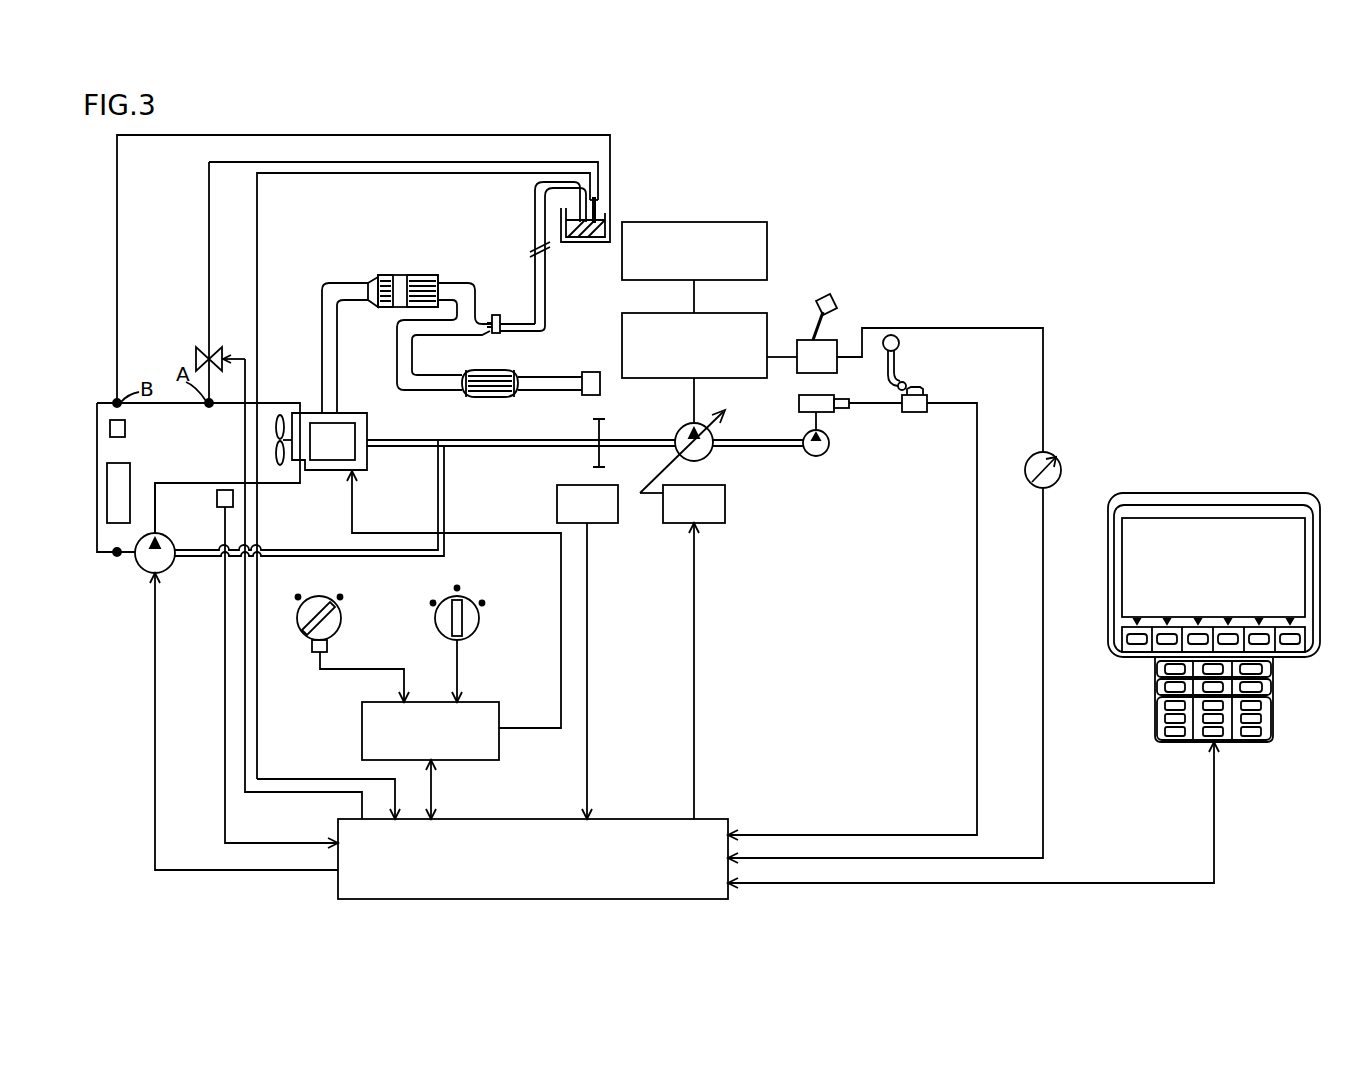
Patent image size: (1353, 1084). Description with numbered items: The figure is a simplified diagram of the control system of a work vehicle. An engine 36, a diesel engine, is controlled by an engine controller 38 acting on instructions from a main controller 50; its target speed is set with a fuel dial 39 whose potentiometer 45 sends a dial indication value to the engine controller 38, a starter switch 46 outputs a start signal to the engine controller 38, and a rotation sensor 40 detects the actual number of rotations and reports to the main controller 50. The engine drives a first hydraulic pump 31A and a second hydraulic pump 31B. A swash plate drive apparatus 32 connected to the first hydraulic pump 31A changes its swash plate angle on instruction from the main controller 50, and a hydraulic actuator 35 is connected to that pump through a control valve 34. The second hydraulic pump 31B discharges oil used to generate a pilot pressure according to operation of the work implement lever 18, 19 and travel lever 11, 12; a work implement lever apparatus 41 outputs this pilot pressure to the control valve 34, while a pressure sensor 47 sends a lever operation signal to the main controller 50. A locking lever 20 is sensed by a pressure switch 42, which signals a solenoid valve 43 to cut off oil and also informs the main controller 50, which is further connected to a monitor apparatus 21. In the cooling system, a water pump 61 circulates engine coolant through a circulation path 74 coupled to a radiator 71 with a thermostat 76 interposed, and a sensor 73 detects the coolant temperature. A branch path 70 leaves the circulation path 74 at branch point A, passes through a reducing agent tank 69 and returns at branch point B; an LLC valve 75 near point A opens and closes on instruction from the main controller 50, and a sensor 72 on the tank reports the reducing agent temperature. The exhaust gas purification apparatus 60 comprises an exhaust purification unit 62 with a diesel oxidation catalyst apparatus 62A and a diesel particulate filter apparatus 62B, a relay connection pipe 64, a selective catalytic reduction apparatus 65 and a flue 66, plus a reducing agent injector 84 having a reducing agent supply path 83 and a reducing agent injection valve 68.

The travel lever 11 is at (940, 314).
The travel lever 12 is at (838, 328).
The work implement lever 18 is at (940, 314).
The work implement lever 19 is at (940, 314).
The locking lever 20 is at (898, 361).
The monitor apparatus 21 is at (1285, 478).
The first hydraulic pump 31A is at (678, 425).
The second hydraulic pump 31B is at (825, 456).
The swash plate drive apparatus 32 is at (726, 501).
The control valve 34 is at (729, 313).
The hydraulic actuator 35 is at (730, 222).
The engine 36 is at (330, 475).
The engine controller 38 is at (479, 702).
The fuel dial 39 is at (300, 635).
The rotation sensor 40 is at (557, 501).
The work implement lever apparatus 41 is at (806, 339).
The pressure switch 42 is at (918, 412).
The valve 43 is at (799, 403).
The potentiometer 45 is at (328, 645).
The starter switch 46 is at (474, 638).
The pressure sensor 47 is at (1058, 456).
The main controller 50 is at (505, 819).
The exhaust gas purification apparatus 60 is at (305, 242).
The water pump 61 is at (167, 566).
The exhaust purification unit 62 is at (385, 325).
The diesel oxidation catalyst apparatus 62A is at (383, 275).
The diesel particulate filter apparatus 62B is at (429, 272).
The relay connection pipe 64 is at (397, 356).
The selective catalytic reduction apparatus 65 is at (488, 398).
The flue 66 is at (590, 372).
The reducing agent injection valve 68 is at (491, 333).
The reducing agent tank 69 is at (606, 216).
The branch path 70 is at (394, 162).
The radiator 71 is at (131, 471).
The sensor 72 is at (597, 200).
The sensor 73 is at (225, 510).
The circulation path 74 is at (158, 503).
The LLC valve 75 is at (200, 348).
The thermostat 76 is at (126, 431).
The reducing agent supply path 83 is at (547, 286).
The reducing agent injector 84 is at (526, 276).